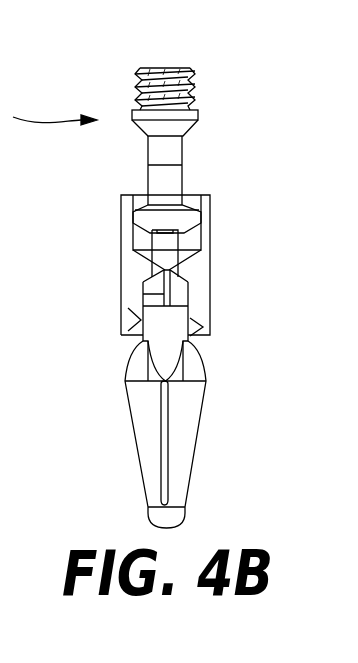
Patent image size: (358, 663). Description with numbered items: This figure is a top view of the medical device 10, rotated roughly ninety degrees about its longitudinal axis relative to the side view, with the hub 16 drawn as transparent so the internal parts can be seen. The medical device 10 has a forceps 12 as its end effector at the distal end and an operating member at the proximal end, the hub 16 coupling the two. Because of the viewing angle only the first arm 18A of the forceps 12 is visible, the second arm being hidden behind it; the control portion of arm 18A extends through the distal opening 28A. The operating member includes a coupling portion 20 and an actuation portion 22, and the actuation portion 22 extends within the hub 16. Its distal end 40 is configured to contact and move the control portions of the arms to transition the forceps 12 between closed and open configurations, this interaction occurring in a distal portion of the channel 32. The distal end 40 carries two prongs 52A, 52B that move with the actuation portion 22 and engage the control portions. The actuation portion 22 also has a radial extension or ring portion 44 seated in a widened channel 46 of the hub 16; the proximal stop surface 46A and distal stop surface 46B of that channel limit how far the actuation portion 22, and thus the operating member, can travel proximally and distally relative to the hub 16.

The medical device 10 is at (78, 198).
The forceps 12 is at (285, 500).
The hub 16 is at (211, 290).
The first arm 18A is at (188, 444).
The coupling portion 20 is at (194, 84).
The actuation portion 22 is at (184, 160).
The distal opening 28A is at (189, 338).
The channel 32 is at (152, 268).
The distal end 40 is at (228, 294).
The ring portion 44 is at (192, 210).
The widened channel 46 is at (133, 243).
The proximal stop surface 46A is at (136, 206).
The distal stop surface 46B is at (186, 259).
The first prong 52A is at (174, 295).
The second prong 52B is at (160, 289).